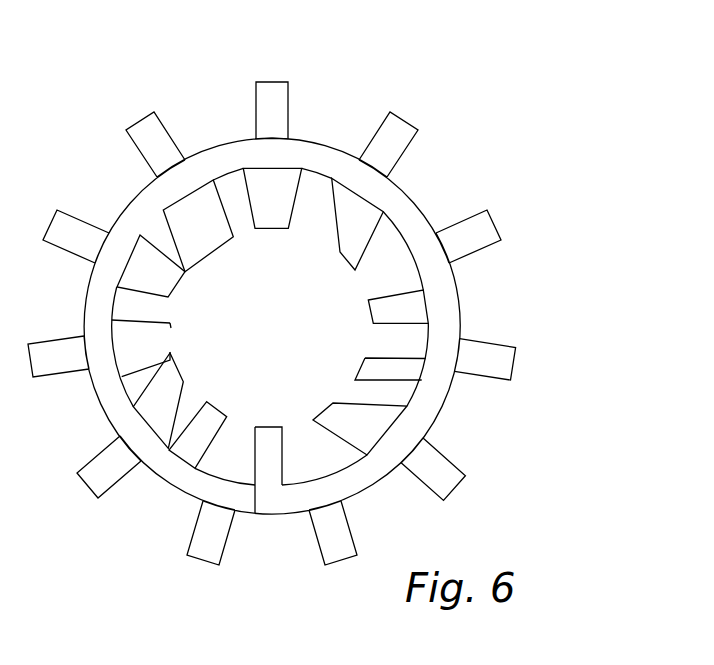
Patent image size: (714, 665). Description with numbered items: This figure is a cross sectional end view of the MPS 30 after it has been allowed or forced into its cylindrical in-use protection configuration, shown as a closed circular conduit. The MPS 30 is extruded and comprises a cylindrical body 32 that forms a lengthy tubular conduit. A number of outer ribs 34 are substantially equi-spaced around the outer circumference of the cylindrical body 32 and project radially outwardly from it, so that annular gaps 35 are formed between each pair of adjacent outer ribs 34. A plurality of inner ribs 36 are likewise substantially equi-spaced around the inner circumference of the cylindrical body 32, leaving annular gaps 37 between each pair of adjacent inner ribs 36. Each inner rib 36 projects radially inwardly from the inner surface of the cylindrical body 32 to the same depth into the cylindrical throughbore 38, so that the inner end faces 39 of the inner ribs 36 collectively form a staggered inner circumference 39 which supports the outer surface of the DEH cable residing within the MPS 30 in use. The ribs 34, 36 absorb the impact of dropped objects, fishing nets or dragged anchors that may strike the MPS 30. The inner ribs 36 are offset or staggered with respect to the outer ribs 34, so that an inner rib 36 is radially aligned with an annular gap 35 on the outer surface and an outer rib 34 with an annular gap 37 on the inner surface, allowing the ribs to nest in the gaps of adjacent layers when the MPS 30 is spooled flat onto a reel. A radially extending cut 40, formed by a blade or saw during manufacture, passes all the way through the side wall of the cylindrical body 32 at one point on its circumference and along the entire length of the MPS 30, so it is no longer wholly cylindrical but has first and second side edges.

The MPS 30 is at (336, 313).
The cylindrical body 32 is at (258, 306).
The outer ribs 34 is at (276, 93).
The annular gaps 35 is at (235, 131).
The inner ribs 36 is at (170, 368).
The annular gaps 37 is at (286, 201).
The cylindrical throughbore 38 is at (278, 340).
The inner end faces 39 is at (315, 417).
The radially extending cut 40 is at (254, 518).